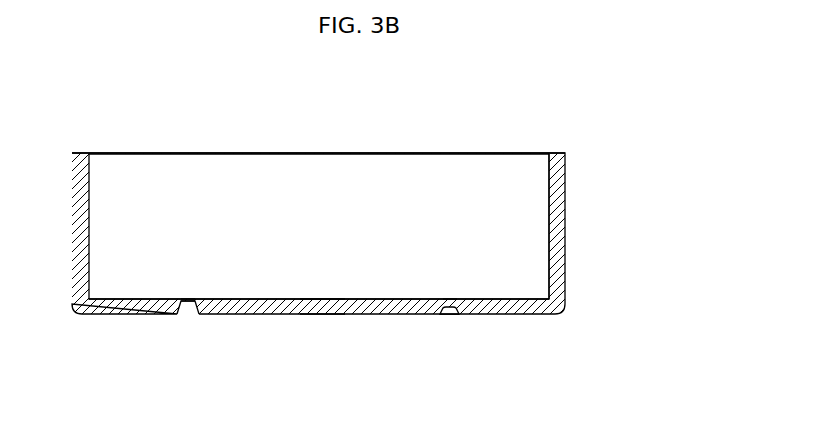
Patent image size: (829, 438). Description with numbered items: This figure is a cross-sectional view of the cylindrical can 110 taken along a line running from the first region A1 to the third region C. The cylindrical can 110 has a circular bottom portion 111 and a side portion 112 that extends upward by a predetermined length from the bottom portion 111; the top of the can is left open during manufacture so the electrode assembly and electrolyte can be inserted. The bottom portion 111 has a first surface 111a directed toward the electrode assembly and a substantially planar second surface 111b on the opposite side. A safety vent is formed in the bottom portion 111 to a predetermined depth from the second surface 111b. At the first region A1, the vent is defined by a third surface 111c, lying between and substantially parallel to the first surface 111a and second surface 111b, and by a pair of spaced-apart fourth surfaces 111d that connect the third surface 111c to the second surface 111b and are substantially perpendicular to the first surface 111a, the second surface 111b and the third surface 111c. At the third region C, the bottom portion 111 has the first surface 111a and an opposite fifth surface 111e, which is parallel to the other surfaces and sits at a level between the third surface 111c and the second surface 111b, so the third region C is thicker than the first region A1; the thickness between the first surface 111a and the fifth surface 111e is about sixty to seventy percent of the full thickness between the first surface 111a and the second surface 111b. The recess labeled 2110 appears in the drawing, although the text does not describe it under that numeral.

The cylindrical can 110 is at (589, 132).
The side portion 112 is at (565, 222).
The bottom portion 111 is at (535, 314).
The first surface 111a is at (323, 299).
The second surface 111b is at (323, 314).
The third surface 111c is at (187, 315).
The fourth surfaces 111d is at (189, 315).
The fifth surface 111e is at (452, 315).
The recess 2110 is at (443, 317).
The first region A1 is at (188, 298).
The third region C is at (450, 298).